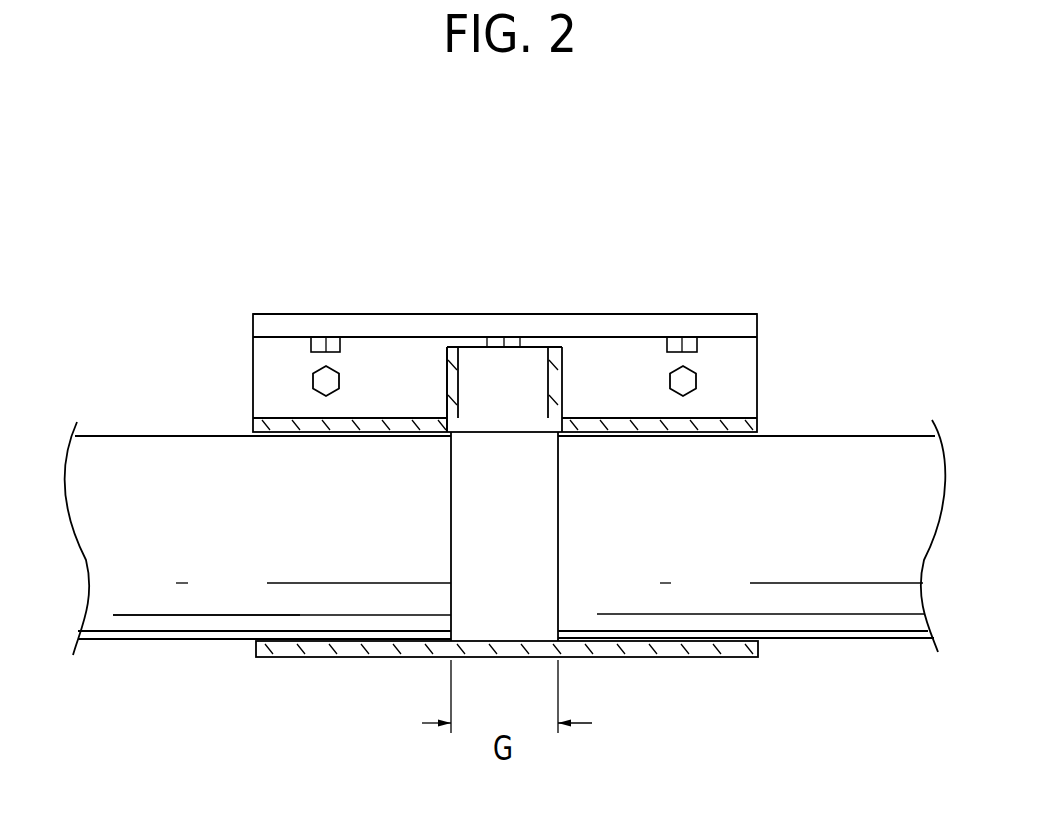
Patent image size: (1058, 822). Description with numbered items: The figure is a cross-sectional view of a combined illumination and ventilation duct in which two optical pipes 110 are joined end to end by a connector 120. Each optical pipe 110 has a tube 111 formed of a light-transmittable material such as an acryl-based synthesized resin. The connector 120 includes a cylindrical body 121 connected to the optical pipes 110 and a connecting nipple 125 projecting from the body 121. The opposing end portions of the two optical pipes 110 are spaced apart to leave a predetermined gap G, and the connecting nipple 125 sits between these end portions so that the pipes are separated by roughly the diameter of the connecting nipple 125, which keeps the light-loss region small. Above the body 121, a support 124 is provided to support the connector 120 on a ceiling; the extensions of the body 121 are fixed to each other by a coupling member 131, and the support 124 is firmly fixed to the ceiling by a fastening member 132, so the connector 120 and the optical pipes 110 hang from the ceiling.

The optical pipe 110 is at (116, 424).
The tube 111 is at (153, 607).
The connector 120 is at (534, 301).
The cylindrical body 121 is at (693, 650).
The support 124 is at (648, 326).
The connecting nipple 125 is at (445, 380).
The coupling member 131 is at (320, 381).
The fastening member 132 is at (318, 346).